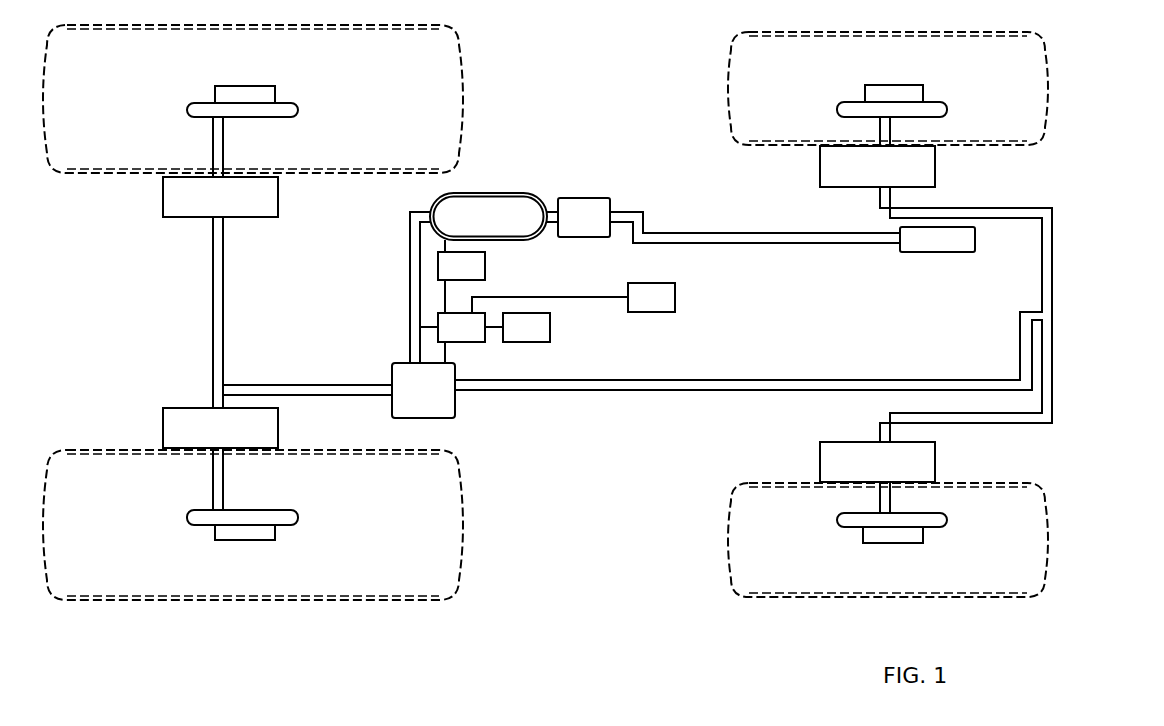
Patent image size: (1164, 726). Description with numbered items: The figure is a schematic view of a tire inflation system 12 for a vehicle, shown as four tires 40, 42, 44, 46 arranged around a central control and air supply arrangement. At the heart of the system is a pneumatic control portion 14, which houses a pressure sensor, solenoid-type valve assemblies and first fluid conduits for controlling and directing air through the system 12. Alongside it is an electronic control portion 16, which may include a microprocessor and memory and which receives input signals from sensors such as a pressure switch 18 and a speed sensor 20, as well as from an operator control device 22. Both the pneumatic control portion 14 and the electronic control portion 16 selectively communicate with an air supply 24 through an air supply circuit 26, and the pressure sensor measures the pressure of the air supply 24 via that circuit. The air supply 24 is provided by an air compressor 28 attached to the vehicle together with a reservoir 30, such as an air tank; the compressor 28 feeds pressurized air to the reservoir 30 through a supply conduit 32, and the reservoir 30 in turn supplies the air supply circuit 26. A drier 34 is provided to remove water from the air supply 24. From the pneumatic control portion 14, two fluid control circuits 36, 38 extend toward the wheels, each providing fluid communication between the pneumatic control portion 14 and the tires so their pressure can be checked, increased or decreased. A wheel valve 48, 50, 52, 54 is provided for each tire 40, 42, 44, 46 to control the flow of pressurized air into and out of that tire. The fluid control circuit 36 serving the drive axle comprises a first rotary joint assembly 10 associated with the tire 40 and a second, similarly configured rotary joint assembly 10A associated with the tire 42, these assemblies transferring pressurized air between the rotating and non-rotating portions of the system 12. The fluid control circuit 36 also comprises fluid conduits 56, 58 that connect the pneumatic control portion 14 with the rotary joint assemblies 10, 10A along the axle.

The rotary joint assembly 10 is at (234, 441).
The second rotary joint assembly 10A is at (240, 207).
The tire inflation system 12 is at (1082, 180).
The pneumatic control portion 14 is at (435, 404).
The electronic control portion 16 is at (476, 341).
The pressure switch 18 is at (476, 279).
The speed sensor 20 is at (541, 341).
The operator control device 22 is at (666, 312).
The air supply 24 is at (613, 179).
The air supply circuit 26 is at (410, 292).
The air compressor 28 is at (950, 253).
The reservoir 30 is at (500, 231).
The supply conduit 32 is at (673, 232).
The drier 34 is at (598, 231).
The fluid control circuit 36 is at (308, 385).
The fluid control circuit 38 is at (627, 391).
The tire 40 is at (106, 547).
The tire 42 is at (105, 114).
The tire 44 is at (781, 557).
The tire 46 is at (776, 97).
The wheel valve 48 is at (297, 525).
The wheel valve 50 is at (297, 117).
The wheel valve 52 is at (940, 527).
The wheel valve 54 is at (940, 103).
The fluid conduit 56 is at (213, 404).
The fluid conduit 58 is at (213, 260).